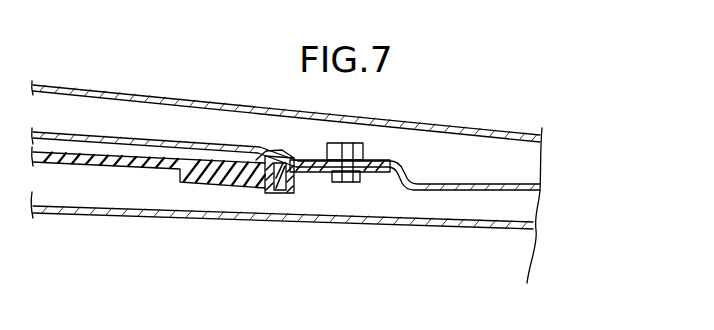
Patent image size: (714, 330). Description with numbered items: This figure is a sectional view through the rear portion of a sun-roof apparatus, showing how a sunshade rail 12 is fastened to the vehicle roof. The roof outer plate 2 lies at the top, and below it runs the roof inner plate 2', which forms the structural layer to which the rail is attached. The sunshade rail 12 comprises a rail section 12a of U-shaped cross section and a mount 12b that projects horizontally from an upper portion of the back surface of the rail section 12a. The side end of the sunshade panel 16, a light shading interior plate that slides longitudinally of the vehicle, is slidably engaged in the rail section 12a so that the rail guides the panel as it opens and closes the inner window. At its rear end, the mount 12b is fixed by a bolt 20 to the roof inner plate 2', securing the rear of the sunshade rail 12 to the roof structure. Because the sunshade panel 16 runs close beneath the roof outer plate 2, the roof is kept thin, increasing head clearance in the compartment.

The roof outer plate 2 is at (286, 111).
The roof inner plate 2' is at (286, 159).
The sunshade rail 12 is at (341, 256).
The rail section 12a is at (283, 193).
The mount 12b is at (316, 172).
The sunshade panel 16 is at (82, 164).
The bolt 20 is at (347, 182).